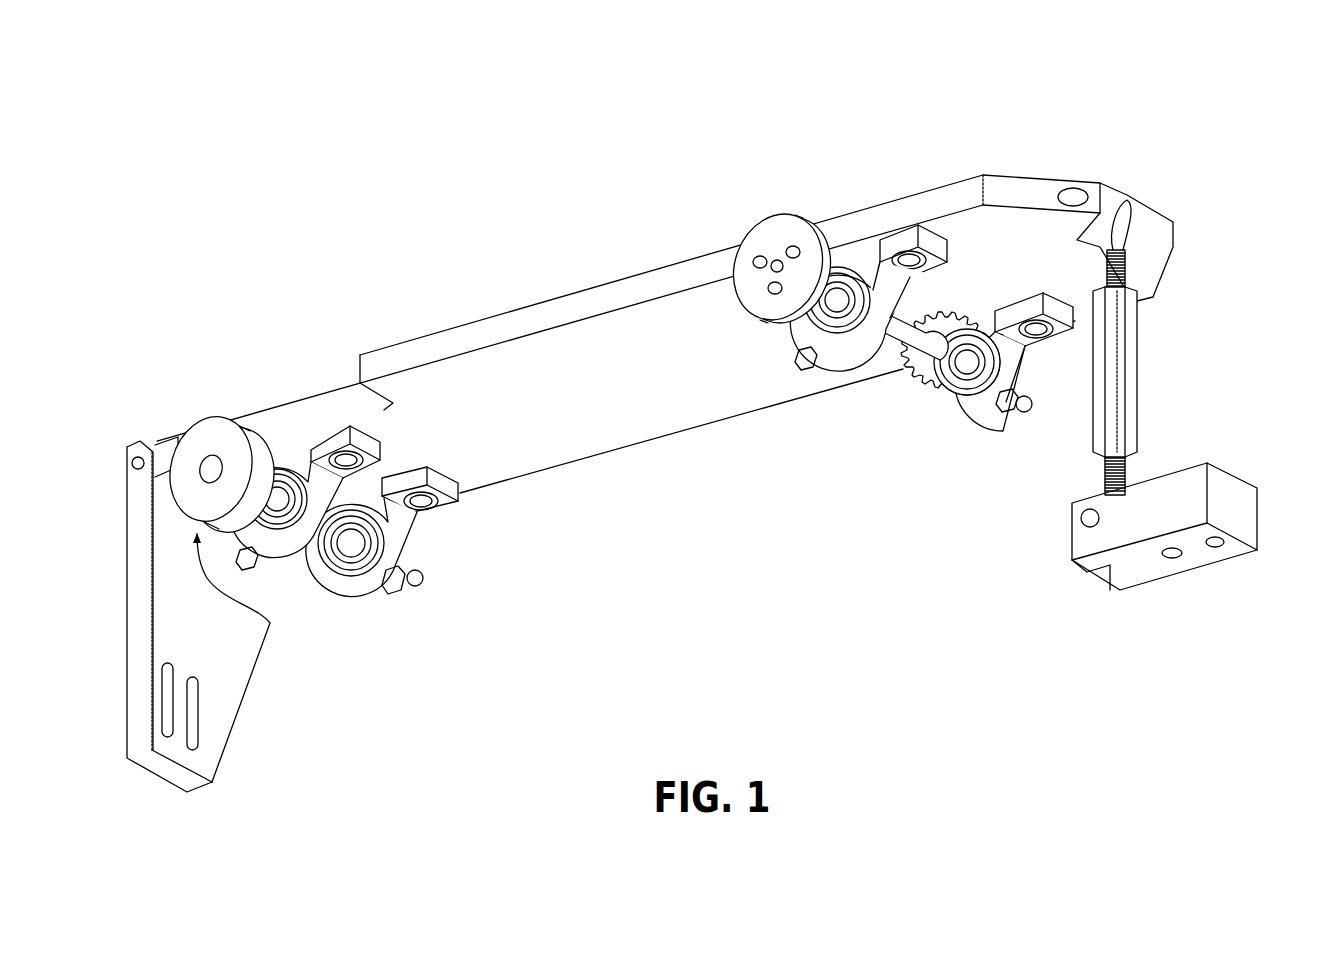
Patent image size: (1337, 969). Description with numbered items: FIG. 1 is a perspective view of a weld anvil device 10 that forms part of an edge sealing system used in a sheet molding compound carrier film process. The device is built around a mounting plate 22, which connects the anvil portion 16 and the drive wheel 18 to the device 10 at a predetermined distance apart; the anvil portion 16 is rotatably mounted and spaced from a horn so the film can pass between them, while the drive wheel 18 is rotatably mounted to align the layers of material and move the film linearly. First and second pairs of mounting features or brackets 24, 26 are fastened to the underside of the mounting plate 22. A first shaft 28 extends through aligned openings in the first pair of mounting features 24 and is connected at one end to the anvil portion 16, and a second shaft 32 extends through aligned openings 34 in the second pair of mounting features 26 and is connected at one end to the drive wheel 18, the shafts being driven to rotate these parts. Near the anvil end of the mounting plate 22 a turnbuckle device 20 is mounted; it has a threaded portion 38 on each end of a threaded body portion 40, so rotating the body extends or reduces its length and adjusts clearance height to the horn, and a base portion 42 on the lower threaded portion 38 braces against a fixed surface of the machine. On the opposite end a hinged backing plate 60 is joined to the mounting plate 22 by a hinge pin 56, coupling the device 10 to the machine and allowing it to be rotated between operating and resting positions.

The weld anvil device 10 is at (1102, 125).
The anvil portion 16 is at (788, 214).
The drive wheel 18 is at (277, 510).
The turnbuckle device 20 is at (1108, 391).
The mounting plate 22 is at (628, 414).
The first pair of mounting features 24 is at (960, 427).
The second pair of mounting features 26 is at (287, 553).
The first shaft 28 is at (835, 307).
The second shaft 32 is at (272, 555).
The aligned openings 34 is at (275, 468).
The threaded portion 38 is at (1128, 268).
The threaded body portion 40 is at (1100, 393).
The base portion 42 is at (1257, 527).
The hinge pin 56 is at (136, 455).
The hinged backing plate 60 is at (232, 753).